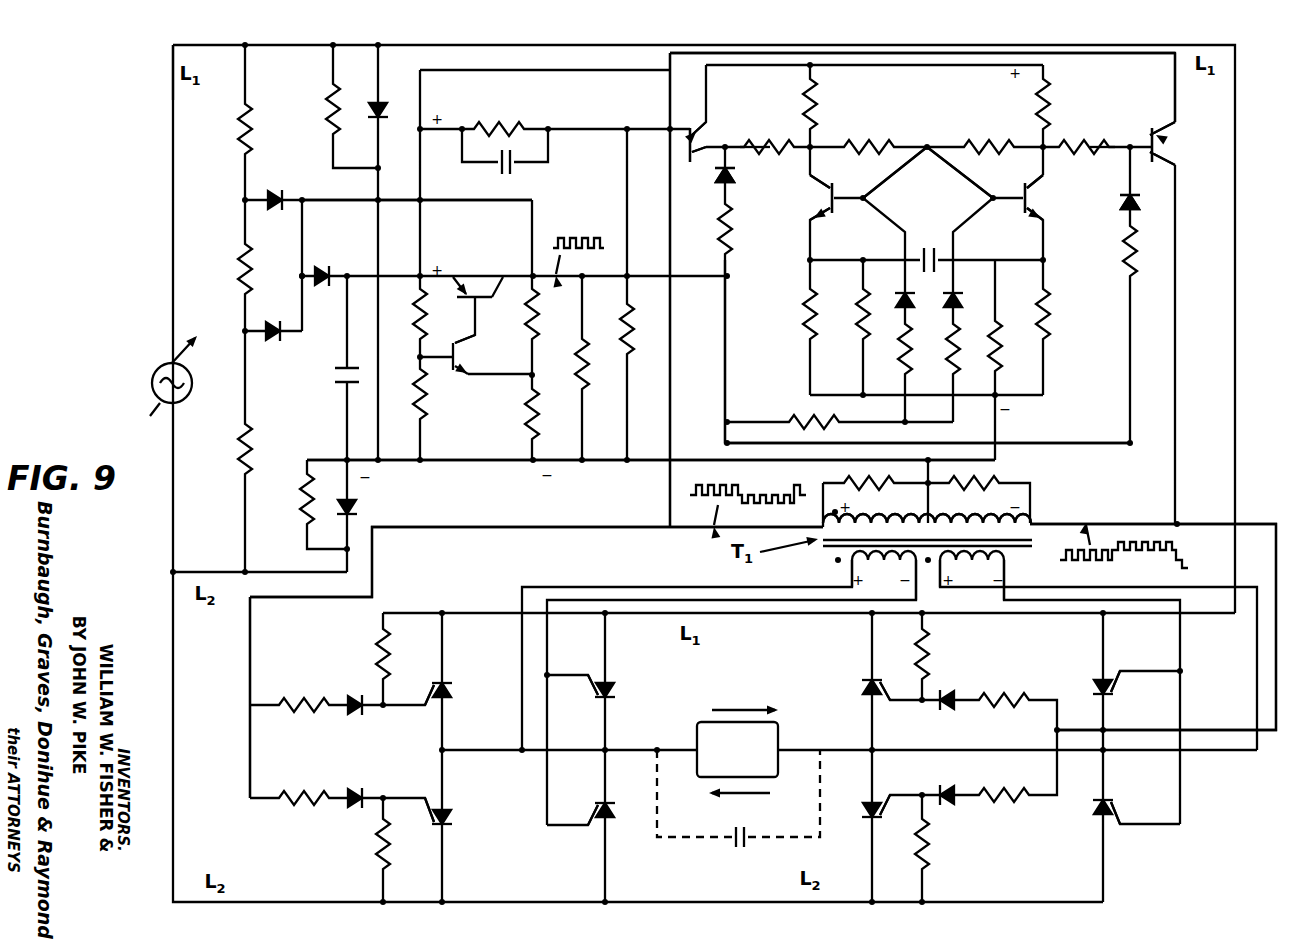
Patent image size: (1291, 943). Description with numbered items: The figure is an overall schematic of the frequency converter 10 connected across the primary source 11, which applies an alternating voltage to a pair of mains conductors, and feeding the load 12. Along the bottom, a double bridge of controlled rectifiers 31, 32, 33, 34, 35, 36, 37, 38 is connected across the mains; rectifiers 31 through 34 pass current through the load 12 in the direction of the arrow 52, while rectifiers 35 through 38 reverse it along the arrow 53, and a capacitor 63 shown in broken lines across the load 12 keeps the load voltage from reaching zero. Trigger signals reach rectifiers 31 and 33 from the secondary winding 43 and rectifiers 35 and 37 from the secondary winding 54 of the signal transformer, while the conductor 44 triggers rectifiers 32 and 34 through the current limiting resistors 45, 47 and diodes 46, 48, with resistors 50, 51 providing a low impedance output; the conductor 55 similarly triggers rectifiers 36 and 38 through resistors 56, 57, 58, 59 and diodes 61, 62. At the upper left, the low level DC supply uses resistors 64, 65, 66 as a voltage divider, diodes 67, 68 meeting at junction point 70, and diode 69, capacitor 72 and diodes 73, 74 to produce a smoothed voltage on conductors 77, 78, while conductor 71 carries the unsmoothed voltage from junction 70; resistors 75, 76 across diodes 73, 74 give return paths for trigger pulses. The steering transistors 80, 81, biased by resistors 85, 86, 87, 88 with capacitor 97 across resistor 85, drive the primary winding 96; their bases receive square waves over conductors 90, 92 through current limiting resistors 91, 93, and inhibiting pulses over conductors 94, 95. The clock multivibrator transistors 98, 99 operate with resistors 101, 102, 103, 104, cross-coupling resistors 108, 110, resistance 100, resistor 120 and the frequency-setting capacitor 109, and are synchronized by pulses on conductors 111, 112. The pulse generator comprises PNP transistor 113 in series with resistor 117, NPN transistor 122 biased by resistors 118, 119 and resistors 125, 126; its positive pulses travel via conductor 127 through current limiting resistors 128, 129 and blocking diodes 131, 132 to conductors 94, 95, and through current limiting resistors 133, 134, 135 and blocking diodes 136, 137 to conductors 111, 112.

The frequency converter 10 is at (137, 206).
The primary source 11 is at (150, 383).
The load 12 is at (775, 722).
The controlled rectifier 31 is at (618, 680).
The controlled rectifier 32 is at (858, 800).
The controlled rectifier 33 is at (620, 828).
The controlled rectifier 34 is at (860, 692).
The controlled rectifier 35 is at (1095, 672).
The controlled rectifier 36 is at (458, 828).
The controlled rectifier 37 is at (1115, 825).
The controlled rectifier 38 is at (452, 678).
The secondary winding 43 is at (884, 575).
The conductor 44 is at (1200, 522).
The current limiting resistor 45 is at (1022, 802).
The diode 46 is at (953, 803).
The current limiting resistor 47 is at (1025, 695).
The diode 48 is at (953, 695).
The resistor 50 is at (935, 657).
The resistor 51 is at (932, 862).
The arrow 52 is at (738, 708).
The arrow 53 is at (745, 793).
The secondary winding 54 is at (972, 575).
The conductor 55 is at (532, 525).
The resistor 56 is at (375, 645).
The resistor 57 is at (300, 692).
The resistor 58 is at (300, 805).
The resistor 59 is at (378, 855).
The diode 61 is at (355, 713).
The diode 62 is at (360, 792).
The capacitor 63 is at (732, 848).
The resistor 64 is at (240, 128).
The resistor 65 is at (240, 262).
The resistor 66 is at (240, 462).
The diode 67 is at (280, 192).
The diode 68 is at (278, 348).
The diode 69 is at (322, 265).
The junction point 70 is at (300, 276).
The conductor 71 is at (352, 198).
The capacitor 72 is at (337, 370).
The diode 73 is at (388, 104).
The diode 74 is at (357, 505).
The resistor 75 is at (326, 100).
The resistor 76 is at (302, 512).
The conductor 77 is at (925, 68).
The conductor 78 is at (360, 448).
The transistor 80 is at (683, 145).
The transistor 81 is at (1178, 142).
The resistor 85 is at (500, 120).
The resistor 86 is at (632, 310).
The resistor 87 is at (871, 506).
The resistor 88 is at (1005, 478).
The conductor 90 is at (805, 132).
The current limiting resistor 91 is at (758, 135).
The conductor 92 is at (1058, 135).
The current limiting resistor 93 is at (1108, 135).
The conductor 94 is at (718, 160).
The conductor 95 is at (1125, 177).
The primary winding 96 is at (960, 513).
The capacitor 97 is at (517, 172).
The transistor 98 is at (822, 207).
The transistor 99 is at (1040, 205).
The resistance 100 is at (1000, 350).
The resistor 101 is at (820, 108).
The resistor 102 is at (803, 320).
The resistor 103 is at (1050, 90).
The resistor 104 is at (1052, 317).
The resistor 108 is at (985, 135).
The capacitor 109 is at (928, 244).
The resistor 110 is at (877, 137).
The conductor 111 is at (908, 215).
The conductor 112 is at (958, 215).
The PNP transistor 113 is at (478, 288).
The resistor 117 is at (586, 405).
The resistor 118 is at (426, 315).
The resistor 119 is at (428, 410).
The resistor 120 is at (860, 305).
The NPN transistor 122 is at (465, 352).
The resistor 125 is at (528, 315).
The resistor 126 is at (525, 424).
The conductor 127 is at (700, 351).
The current limiting resistor 128 is at (718, 228).
The current limiting resistor 129 is at (1122, 258).
The blocking diode 131 is at (735, 178).
The blocking diode 132 is at (1125, 208).
The current limiting resistor 133 is at (795, 418).
The current limiting resistor 134 is at (910, 330).
The current limiting resistor 135 is at (950, 360).
The blocking diode 136 is at (890, 298).
The blocking diode 137 is at (970, 298).